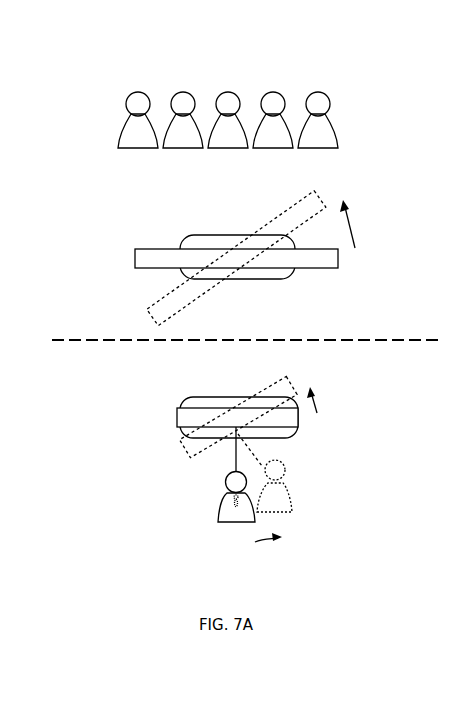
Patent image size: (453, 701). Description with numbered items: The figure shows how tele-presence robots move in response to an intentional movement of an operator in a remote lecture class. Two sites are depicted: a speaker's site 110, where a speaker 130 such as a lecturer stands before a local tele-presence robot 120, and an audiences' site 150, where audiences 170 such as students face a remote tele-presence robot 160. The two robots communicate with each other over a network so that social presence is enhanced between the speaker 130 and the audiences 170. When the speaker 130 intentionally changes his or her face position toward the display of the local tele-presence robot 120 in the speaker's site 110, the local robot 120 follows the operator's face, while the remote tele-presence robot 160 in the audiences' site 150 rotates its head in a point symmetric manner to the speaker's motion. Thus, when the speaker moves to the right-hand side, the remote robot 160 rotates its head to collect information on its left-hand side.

The audiences' site 150 is at (206, 43).
The audiences 170 is at (363, 125).
The remote tele-presence robot 160 is at (128, 255).
The speaker's site 110 is at (185, 592).
The local tele-presence robot 120 is at (173, 411).
The speaker 130 is at (192, 509).